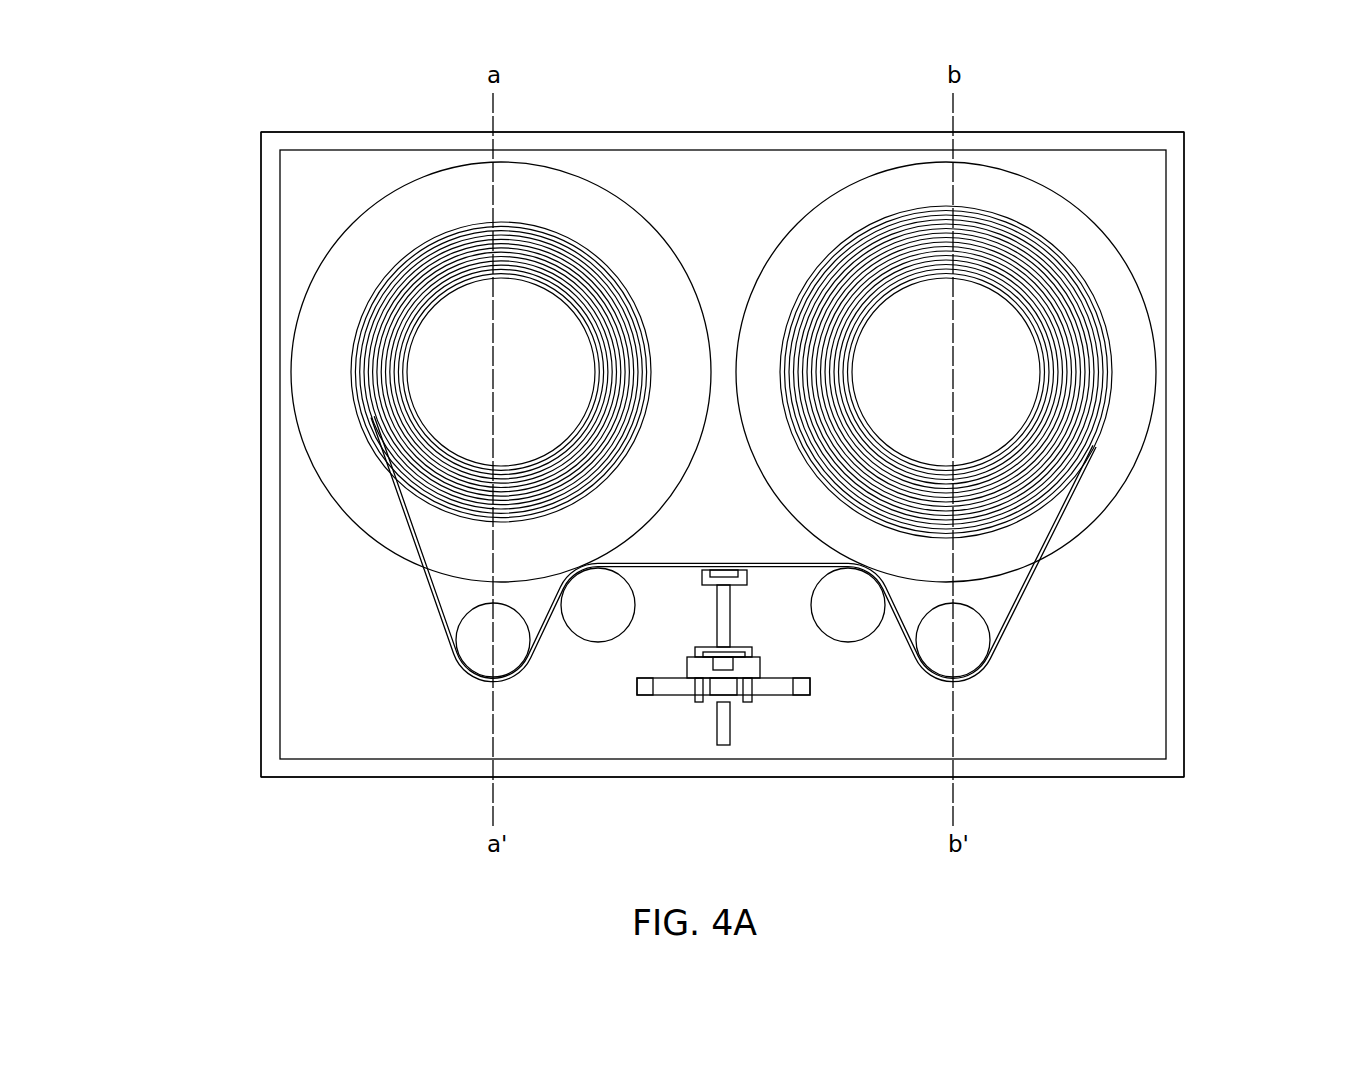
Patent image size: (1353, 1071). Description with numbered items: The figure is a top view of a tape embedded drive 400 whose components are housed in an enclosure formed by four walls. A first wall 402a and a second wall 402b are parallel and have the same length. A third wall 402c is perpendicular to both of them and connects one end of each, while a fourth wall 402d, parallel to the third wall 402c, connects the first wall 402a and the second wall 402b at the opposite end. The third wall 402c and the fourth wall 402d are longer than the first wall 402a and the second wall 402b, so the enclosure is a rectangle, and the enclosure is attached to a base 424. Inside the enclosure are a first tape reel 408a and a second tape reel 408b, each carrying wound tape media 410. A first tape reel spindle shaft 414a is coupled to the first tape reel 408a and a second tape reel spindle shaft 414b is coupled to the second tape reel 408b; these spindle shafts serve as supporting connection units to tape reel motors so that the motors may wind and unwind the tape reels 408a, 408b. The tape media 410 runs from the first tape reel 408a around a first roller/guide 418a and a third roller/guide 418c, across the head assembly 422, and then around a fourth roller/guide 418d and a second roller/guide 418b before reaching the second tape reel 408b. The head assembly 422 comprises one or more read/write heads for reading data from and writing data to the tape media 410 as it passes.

The tape embedded drive 400 is at (193, 96).
The first wall 402a is at (258, 332).
The second wall 402b is at (1190, 426).
The third wall 402c is at (400, 130).
The fourth wall 402d is at (704, 779).
The first tape reel 408a is at (310, 465).
The second tape reel 408b is at (1122, 489).
The tape media 410 is at (418, 578).
The first tape reel spindle shaft 414a is at (470, 365).
The second tape reel spindle shaft 414b is at (970, 362).
The first roller/guide 418a is at (478, 643).
The second roller/guide 418b is at (963, 639).
The third roller/guide 418c is at (592, 618).
The fourth roller/guide 418d is at (843, 609).
The head assembly 422 is at (746, 721).
The base 424 is at (345, 657).